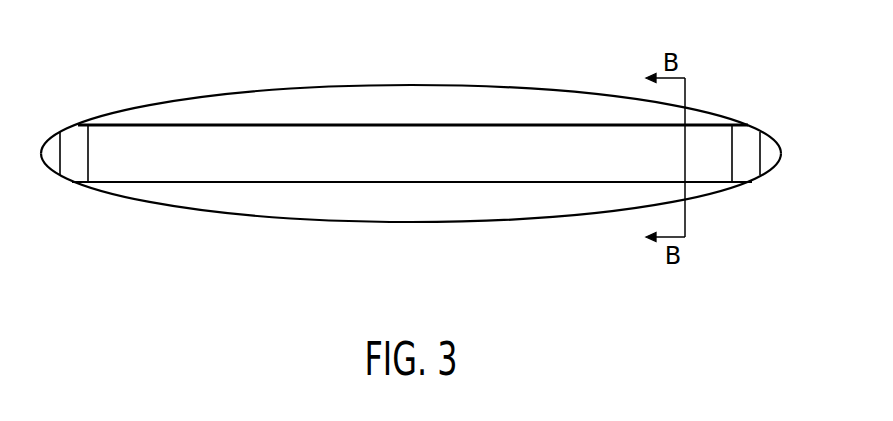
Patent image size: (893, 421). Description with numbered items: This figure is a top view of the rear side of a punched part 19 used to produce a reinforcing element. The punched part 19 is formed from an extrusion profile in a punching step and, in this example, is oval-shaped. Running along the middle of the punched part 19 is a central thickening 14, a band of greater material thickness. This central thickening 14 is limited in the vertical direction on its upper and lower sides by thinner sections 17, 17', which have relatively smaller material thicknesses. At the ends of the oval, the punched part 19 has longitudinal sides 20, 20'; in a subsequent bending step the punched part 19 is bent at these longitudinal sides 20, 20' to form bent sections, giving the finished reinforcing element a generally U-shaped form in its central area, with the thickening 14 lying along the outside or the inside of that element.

The central thickening 14 is at (637, 165).
The thinner section 17 is at (411, 85).
The thinner section 17' is at (411, 222).
The punched part 19 is at (411, 157).
The longitudinal side 20 is at (749, 117).
The longitudinal side 20' is at (748, 192).